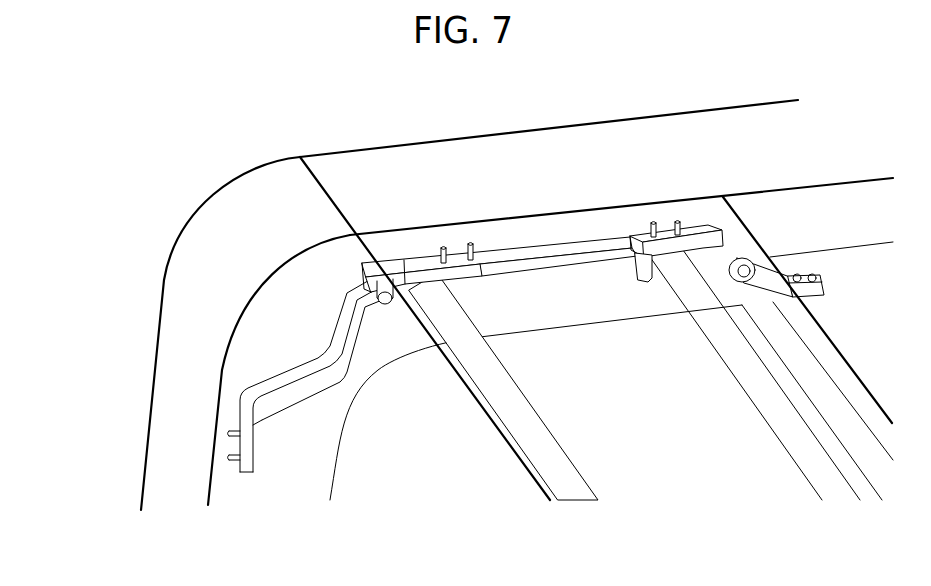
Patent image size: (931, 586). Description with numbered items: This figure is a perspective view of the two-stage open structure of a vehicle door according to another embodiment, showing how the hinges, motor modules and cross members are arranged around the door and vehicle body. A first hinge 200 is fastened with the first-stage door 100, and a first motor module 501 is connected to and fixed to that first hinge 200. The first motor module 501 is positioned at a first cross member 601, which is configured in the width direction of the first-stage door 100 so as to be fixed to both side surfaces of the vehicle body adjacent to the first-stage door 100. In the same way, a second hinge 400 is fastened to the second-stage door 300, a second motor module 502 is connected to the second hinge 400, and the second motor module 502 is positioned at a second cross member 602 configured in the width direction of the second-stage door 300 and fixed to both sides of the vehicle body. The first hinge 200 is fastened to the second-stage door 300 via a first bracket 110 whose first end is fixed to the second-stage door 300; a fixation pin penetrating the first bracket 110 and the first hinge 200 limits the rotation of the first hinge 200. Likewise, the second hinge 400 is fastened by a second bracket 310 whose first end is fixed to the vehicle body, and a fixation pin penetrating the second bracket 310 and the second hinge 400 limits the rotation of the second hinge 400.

The first-stage door 100 is at (168, 440).
The first bracket 110 is at (428, 260).
The first hinge 200 is at (272, 388).
The second-stage door 300 is at (412, 182).
The second bracket 310 is at (802, 273).
The second hinge 400 is at (693, 237).
The first motor module 501 is at (377, 308).
The second motor module 502 is at (650, 278).
The first cross member 601 is at (523, 440).
The second cross member 602 is at (782, 428).